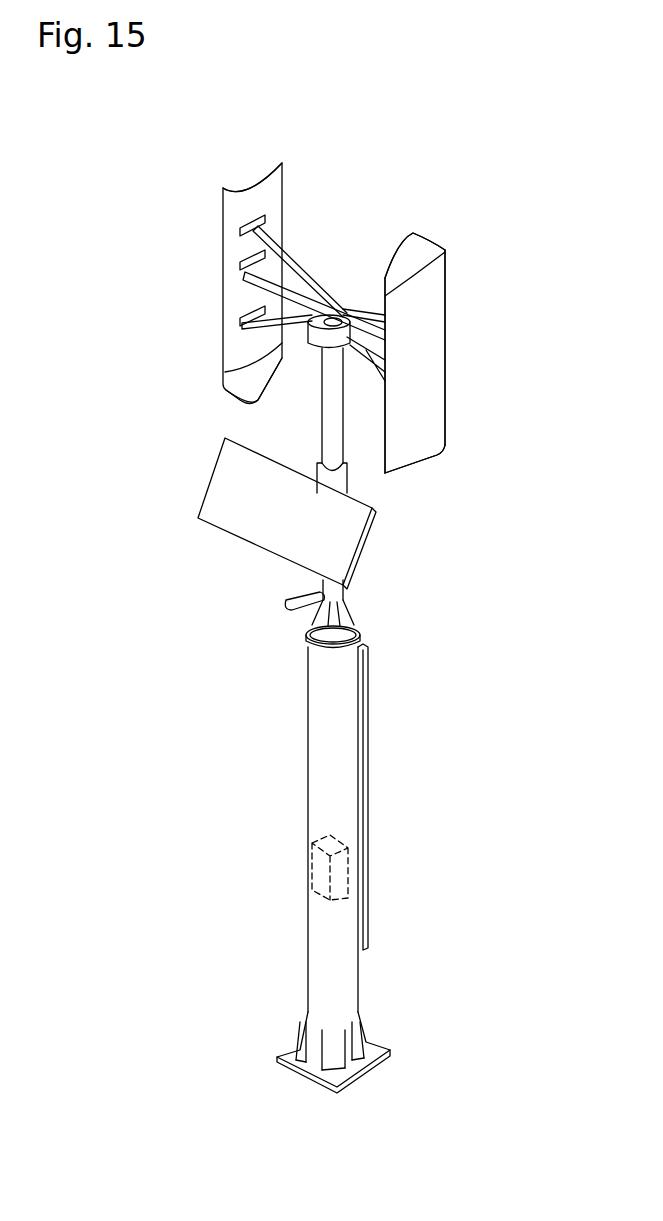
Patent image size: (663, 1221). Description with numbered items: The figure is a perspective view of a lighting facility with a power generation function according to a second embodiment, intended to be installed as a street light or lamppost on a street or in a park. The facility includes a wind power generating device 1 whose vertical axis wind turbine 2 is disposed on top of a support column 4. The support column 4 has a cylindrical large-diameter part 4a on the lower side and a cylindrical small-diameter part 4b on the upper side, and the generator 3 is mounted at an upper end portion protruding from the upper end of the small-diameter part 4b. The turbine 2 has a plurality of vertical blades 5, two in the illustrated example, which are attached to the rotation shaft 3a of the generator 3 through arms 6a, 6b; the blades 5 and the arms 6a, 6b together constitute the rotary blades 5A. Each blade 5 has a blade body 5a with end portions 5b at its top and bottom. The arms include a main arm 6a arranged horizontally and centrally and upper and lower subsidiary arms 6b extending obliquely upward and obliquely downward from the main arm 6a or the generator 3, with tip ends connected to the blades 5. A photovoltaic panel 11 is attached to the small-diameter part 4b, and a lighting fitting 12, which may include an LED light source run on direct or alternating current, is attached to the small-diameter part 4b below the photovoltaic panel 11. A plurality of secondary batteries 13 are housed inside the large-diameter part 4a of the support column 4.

The wind power generating device 1 is at (451, 192).
The vertical axis wind turbine 2 is at (197, 268).
The generator 3 is at (309, 348).
The rotation shaft 3a is at (340, 318).
The support column 4 is at (456, 584).
The large-diameter part 4a is at (362, 757).
The small-diameter part 4b is at (338, 596).
The vertical blades 5 is at (218, 311).
The rotary blades 5A is at (452, 384).
The blade body 5a is at (232, 222).
The blade end portion 5b is at (245, 178).
The main arm 6a is at (288, 293).
The subsidiary arms 6b is at (268, 243).
The photovoltaic panel 11 is at (240, 517).
The lighting fitting 12 is at (290, 610).
The secondary batteries 13 is at (318, 868).